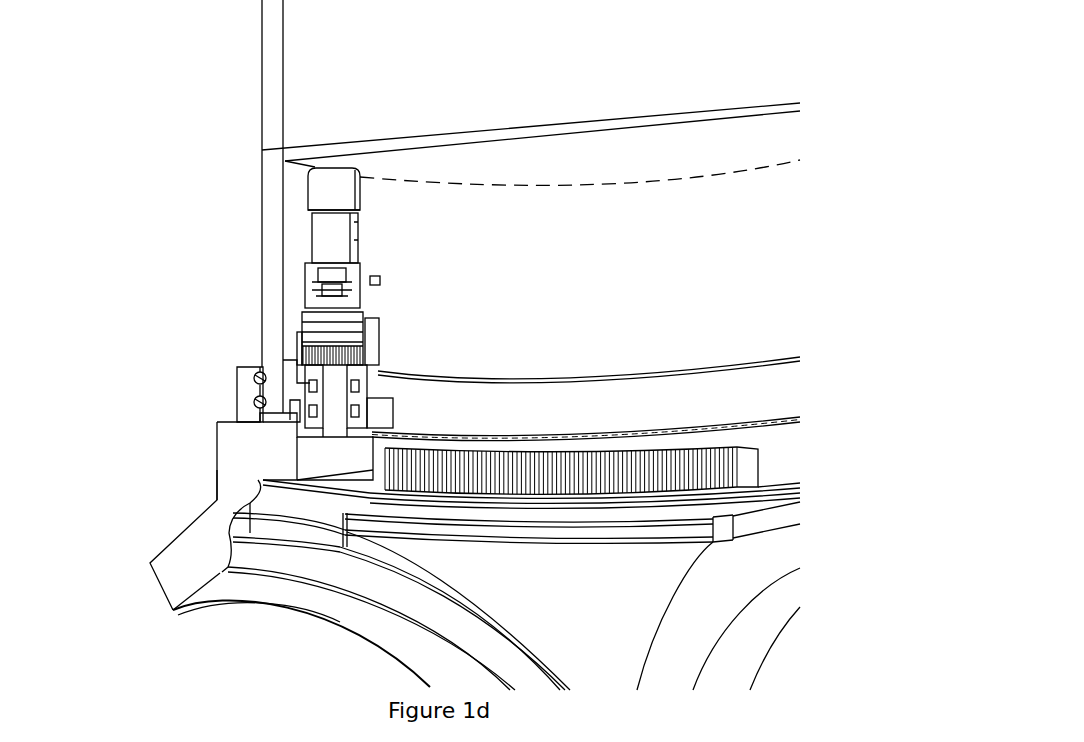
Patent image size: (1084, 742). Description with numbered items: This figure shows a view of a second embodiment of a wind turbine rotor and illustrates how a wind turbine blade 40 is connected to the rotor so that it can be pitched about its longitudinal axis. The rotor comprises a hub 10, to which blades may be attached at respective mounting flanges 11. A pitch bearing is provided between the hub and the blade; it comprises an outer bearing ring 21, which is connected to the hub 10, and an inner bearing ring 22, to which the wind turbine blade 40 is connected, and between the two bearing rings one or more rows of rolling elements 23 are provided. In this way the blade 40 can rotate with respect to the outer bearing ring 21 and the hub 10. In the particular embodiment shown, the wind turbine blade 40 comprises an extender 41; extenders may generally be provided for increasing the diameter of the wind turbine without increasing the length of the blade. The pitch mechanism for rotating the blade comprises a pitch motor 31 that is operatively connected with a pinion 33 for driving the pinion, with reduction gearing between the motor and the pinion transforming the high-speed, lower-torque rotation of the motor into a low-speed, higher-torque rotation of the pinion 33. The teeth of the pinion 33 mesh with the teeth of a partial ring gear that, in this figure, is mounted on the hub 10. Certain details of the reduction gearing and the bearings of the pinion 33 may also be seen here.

The hub 10 is at (513, 588).
The mounting flange 11 is at (232, 473).
The outer bearing ring 21 is at (247, 397).
The inner bearing ring 22 is at (277, 370).
The rolling elements 23 is at (257, 377).
The pitch motor 31 is at (335, 187).
The pinion 33 is at (322, 455).
The wind turbine blade 40 is at (312, 110).
The extender 41 is at (273, 243).